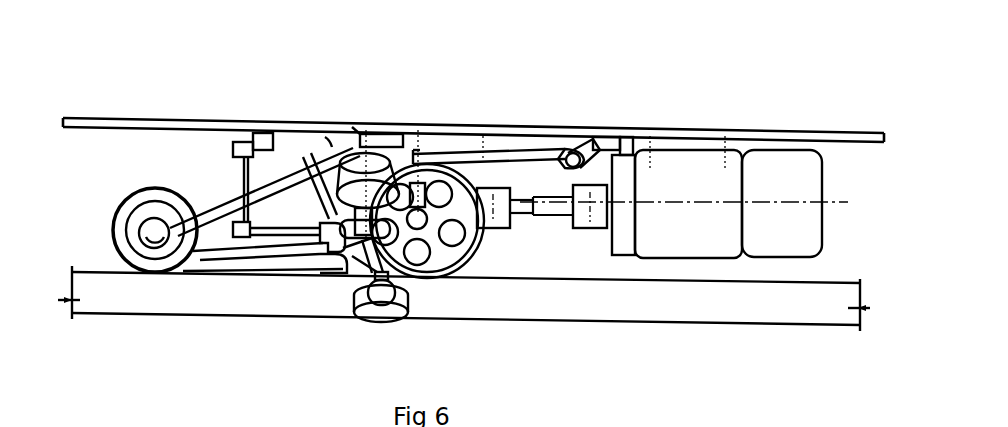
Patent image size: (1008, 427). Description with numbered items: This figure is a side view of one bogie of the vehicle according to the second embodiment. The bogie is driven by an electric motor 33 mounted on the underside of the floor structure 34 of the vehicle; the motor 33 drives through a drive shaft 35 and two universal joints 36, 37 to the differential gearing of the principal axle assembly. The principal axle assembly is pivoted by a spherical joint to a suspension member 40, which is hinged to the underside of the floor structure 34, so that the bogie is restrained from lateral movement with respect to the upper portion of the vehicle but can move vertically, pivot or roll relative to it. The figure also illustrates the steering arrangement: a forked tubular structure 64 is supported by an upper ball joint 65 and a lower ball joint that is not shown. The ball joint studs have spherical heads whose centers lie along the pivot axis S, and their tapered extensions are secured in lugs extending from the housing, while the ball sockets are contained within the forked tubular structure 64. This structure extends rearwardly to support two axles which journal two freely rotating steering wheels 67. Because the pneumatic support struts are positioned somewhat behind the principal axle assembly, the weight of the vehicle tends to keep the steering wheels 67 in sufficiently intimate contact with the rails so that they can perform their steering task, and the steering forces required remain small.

The electric motor 33 is at (803, 258).
The floor structure 34 is at (777, 127).
The drive shaft 35 is at (553, 217).
The universal joint 36 is at (575, 228).
The universal joint 37 is at (495, 232).
The suspension member 40 is at (483, 123).
The forked tubular structure 64 is at (308, 163).
The upper ball joint 65 is at (335, 165).
The steering wheel 67 is at (175, 262).
The pivot axis S is at (330, 140).